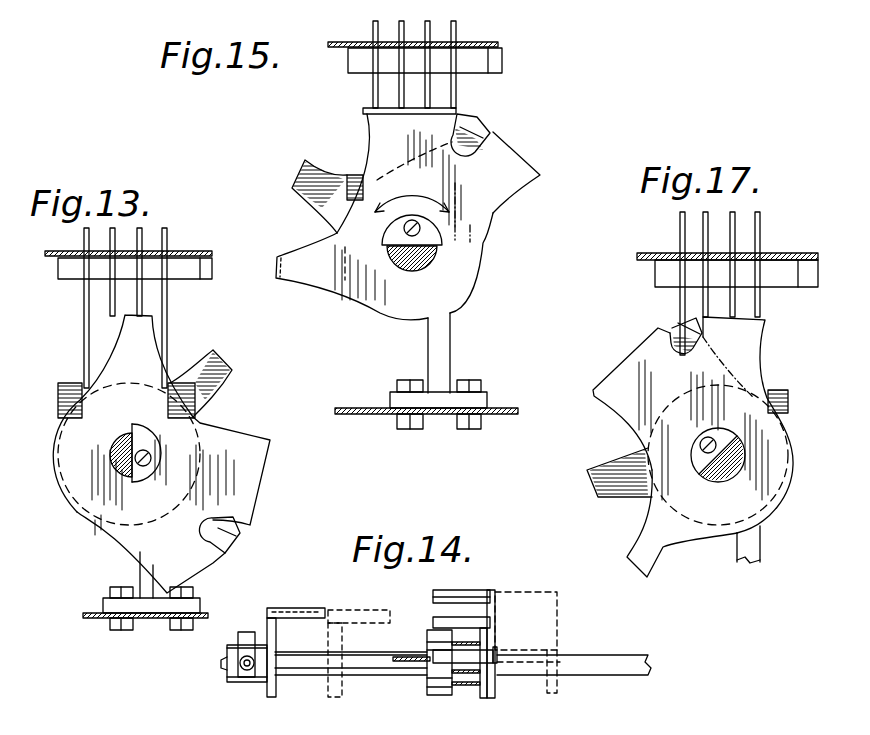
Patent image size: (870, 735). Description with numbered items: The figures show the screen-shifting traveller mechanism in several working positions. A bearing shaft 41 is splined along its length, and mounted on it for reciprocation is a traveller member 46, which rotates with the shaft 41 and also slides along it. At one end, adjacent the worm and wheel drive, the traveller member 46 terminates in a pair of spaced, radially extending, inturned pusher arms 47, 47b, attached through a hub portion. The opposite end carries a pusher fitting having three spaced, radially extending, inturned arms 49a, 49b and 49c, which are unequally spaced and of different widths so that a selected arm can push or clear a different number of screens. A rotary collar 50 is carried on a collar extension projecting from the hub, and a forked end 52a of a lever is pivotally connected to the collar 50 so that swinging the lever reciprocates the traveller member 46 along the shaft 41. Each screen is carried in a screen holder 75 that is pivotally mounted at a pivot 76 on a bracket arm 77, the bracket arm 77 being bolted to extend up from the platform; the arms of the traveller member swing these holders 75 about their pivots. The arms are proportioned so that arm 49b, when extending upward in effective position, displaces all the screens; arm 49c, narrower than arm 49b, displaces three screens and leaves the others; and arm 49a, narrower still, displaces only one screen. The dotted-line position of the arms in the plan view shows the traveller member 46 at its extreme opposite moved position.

In FIG. 13, the bearing shaft 41 is at (110, 473).
In FIG. 15, the bearing shaft 41 is at (425, 258).
In FIG. 17, the bearing shaft 41 is at (735, 470).
In FIG. 14, the bearing shaft 41 is at (574, 653).
In FIG. 14, the traveller member 46 is at (372, 672).
In FIG. 13, the pusher arm 47 is at (232, 360).
In FIG. 15, the pusher arm 47 is at (312, 183).
In FIG. 17, the pusher arm 47 is at (605, 486).
In FIG. 14, the pusher arm 47 is at (300, 616).
In FIG. 13, the pusher arm 47b is at (241, 541).
In FIG. 15, the pusher arm 47b is at (473, 137).
In FIG. 17, the pusher arm 47b is at (672, 330).
In FIG. 13, the arm 49a is at (130, 333).
In FIG. 15, the arm 49a is at (305, 268).
In FIG. 17, the arm 49a is at (660, 548).
In FIG. 14, the arm 49a is at (466, 664).
In FIG. 13, the arm 49b is at (245, 483).
In FIG. 15, the arm 49b is at (365, 113).
In FIG. 17, the arm 49b is at (642, 350).
In FIG. 14, the arm 49b is at (470, 592).
In FIG. 13, the arm 49c is at (197, 563).
In FIG. 15, the arm 49c is at (520, 160).
In FIG. 17, the arm 49c is at (732, 346).
In FIG. 14, the rotary collar 50 is at (247, 673).
In FIG. 14, the forked end 52a is at (245, 635).
In FIG. 13, the screen holder 75 is at (114, 238).
In FIG. 15, the screen holder 75 is at (452, 90).
In FIG. 17, the screen holder 75 is at (707, 237).
In FIG. 14, the screen holder 75 is at (410, 661).
In FIG. 14, the pivot 76 is at (435, 628).
In FIG. 13, the bracket arm 77 is at (153, 605).
In FIG. 15, the bracket arm 77 is at (441, 353).
In FIG. 17, the bracket arm 77 is at (750, 545).